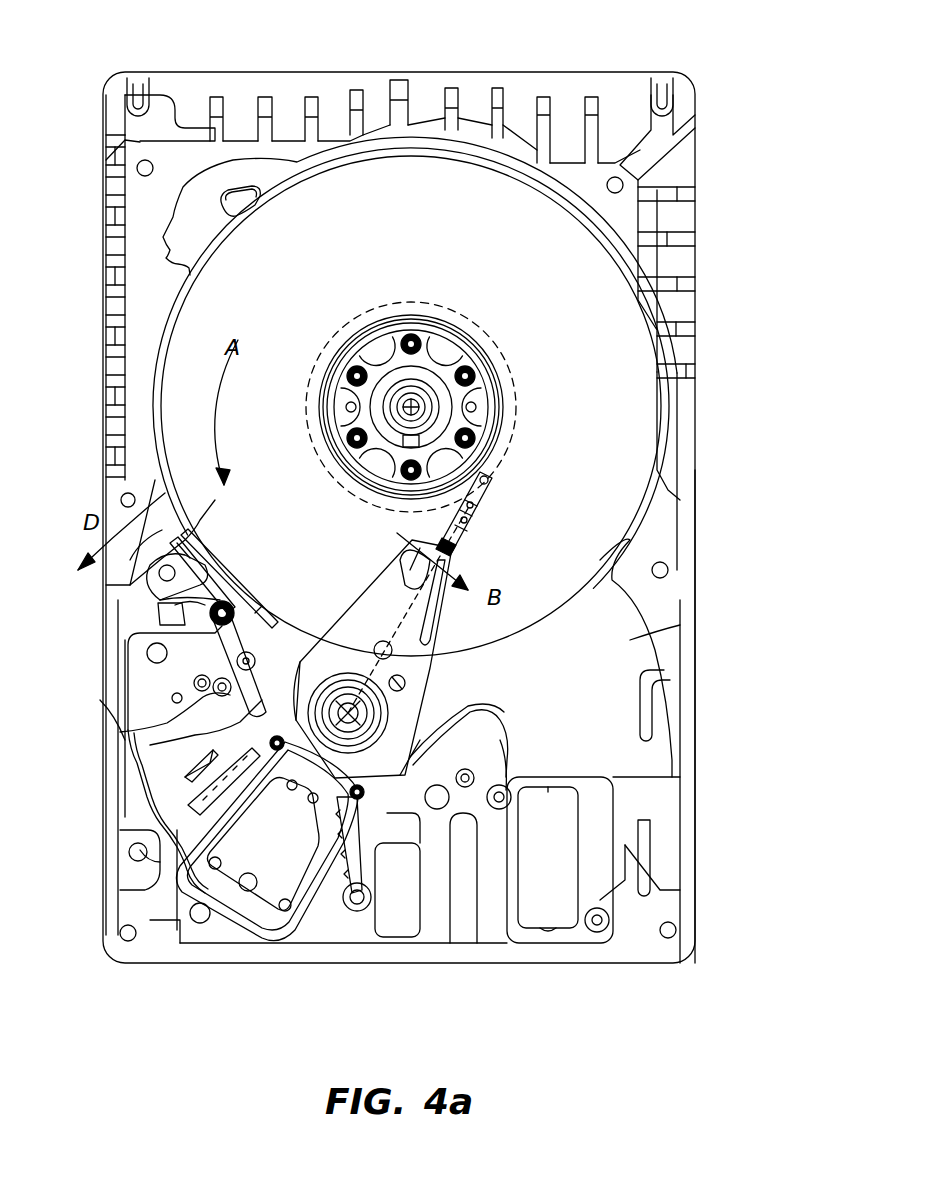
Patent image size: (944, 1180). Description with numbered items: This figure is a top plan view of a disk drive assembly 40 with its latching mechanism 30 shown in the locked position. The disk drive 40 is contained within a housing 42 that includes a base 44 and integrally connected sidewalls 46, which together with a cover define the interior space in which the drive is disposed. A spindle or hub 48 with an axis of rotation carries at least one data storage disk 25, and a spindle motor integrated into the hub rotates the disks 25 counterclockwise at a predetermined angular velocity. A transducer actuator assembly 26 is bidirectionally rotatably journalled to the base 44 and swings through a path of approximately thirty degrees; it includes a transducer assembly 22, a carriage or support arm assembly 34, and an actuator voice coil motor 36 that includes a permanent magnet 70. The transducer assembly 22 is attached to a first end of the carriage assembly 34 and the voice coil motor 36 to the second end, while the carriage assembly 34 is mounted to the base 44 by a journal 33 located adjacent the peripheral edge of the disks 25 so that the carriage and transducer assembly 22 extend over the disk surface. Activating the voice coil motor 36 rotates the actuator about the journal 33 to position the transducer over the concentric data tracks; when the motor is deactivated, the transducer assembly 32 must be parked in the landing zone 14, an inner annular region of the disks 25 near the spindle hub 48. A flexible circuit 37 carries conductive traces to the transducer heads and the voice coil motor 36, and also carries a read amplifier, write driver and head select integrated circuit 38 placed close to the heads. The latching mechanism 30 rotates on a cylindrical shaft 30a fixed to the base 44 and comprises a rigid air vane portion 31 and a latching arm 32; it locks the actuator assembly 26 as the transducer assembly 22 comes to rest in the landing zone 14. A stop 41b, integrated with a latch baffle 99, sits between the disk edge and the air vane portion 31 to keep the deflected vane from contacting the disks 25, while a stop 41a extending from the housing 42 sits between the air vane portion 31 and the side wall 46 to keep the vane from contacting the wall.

The landing zone 14 is at (430, 396).
The transducer assembly 22 is at (492, 478).
The data storage disks 25 is at (158, 426).
The transducer actuator assembly 26 is at (390, 699).
The latching mechanism 30 is at (207, 650).
The shaft 30a is at (255, 600).
The air vane portion 31 is at (215, 596).
The latching arm 32 is at (255, 705).
The journal 33 is at (352, 722).
The carriage assembly 34 is at (407, 652).
The actuator voice coil motor 36 is at (298, 930).
The flexible circuit 37 is at (512, 738).
The read amplifier, write driver and head select integrated circuit 38 is at (410, 733).
The disk drive assembly 40 is at (735, 256).
The stop 41a is at (160, 618).
The stop 41b is at (192, 530).
The housing 42 is at (668, 505).
The base 44 is at (645, 650).
The sidewalls 46 is at (190, 72).
The spindle 48 is at (438, 409).
The permanent magnet 70 is at (138, 734).
The latch baffle 99 is at (232, 585).